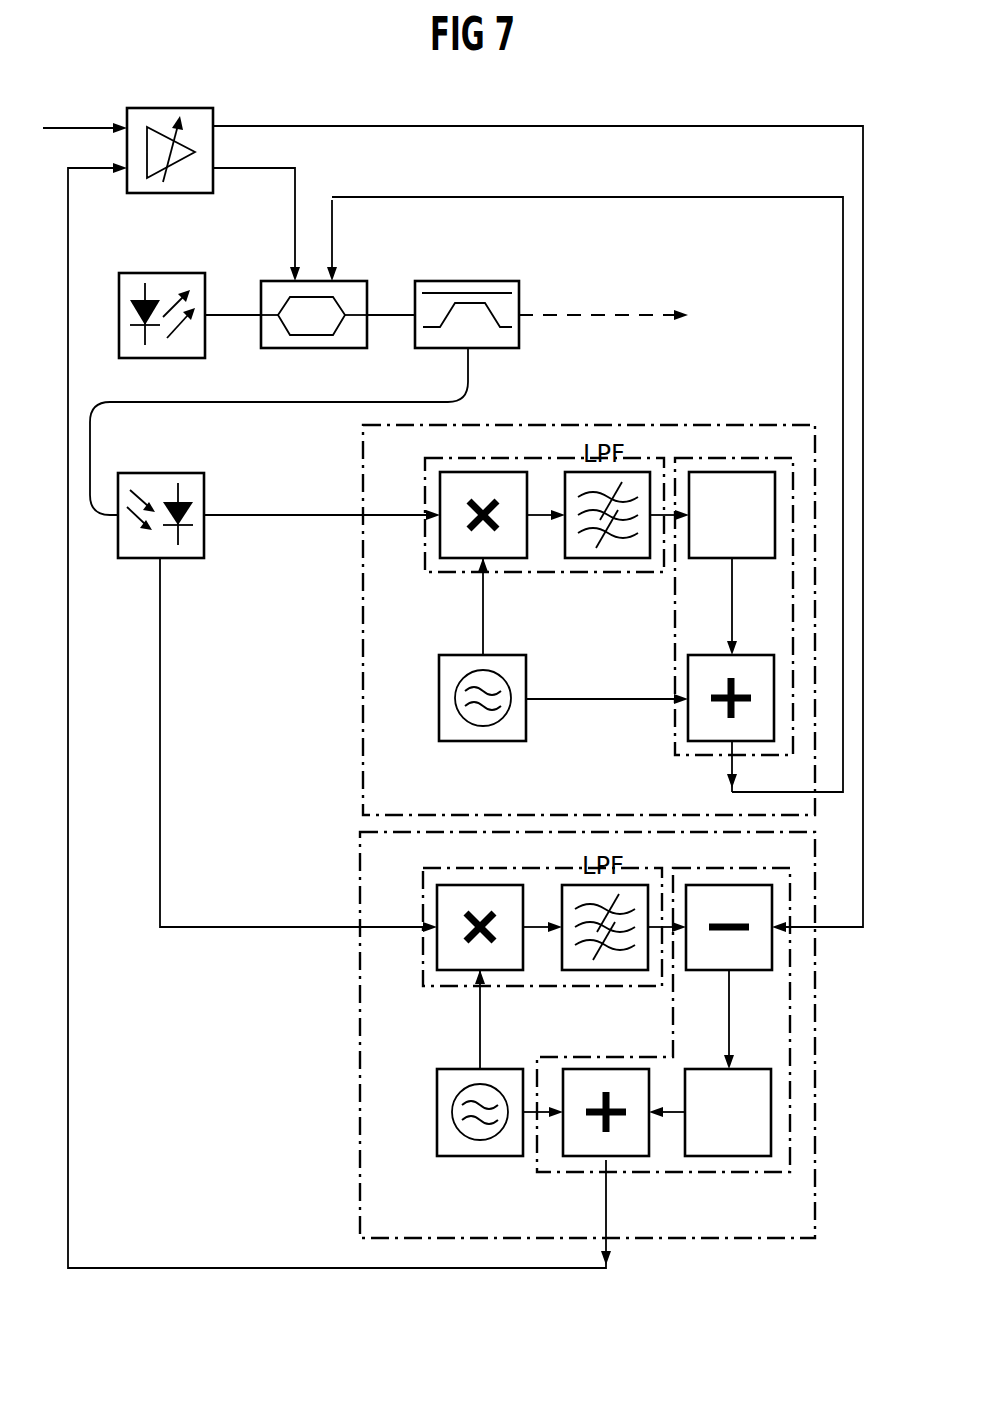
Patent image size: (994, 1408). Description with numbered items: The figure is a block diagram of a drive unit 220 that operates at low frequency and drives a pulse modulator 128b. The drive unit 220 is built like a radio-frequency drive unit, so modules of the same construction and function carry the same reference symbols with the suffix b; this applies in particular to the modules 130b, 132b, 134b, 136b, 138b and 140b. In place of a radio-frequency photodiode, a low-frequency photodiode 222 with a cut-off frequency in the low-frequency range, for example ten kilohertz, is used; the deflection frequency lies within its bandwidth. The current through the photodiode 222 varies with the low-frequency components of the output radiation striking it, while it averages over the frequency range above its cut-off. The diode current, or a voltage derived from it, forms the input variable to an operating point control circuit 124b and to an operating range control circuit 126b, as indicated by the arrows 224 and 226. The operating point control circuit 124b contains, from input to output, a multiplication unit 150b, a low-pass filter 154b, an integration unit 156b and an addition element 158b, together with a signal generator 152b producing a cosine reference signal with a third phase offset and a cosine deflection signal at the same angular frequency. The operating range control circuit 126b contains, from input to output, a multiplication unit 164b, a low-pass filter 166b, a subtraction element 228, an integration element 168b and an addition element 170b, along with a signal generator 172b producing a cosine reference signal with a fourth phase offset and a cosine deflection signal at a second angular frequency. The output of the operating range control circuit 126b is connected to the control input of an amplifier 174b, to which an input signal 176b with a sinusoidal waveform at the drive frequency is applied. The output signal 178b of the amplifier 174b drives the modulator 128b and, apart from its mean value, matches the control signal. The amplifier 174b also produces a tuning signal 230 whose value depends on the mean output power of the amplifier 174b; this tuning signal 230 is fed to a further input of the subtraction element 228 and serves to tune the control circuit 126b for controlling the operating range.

The amplifier 174b is at (196, 107).
The input signal 176b is at (86, 126).
The output signal 178b is at (280, 167).
The tuning signal 230 is at (770, 125).
The circuit module 130b is at (676, 196).
The circuit module 132b is at (68, 1057).
The circuit module 134b is at (205, 335).
The pulse modulator 128b is at (367, 335).
The circuit module 136b is at (500, 280).
The circuit module 138b is at (615, 314).
The circuit module 140b is at (470, 368).
The low-frequency photodiode 222 is at (120, 560).
The drive unit 220 is at (338, 560).
The arrow 224 is at (296, 514).
The arrow 226 is at (160, 855).
The operating point control circuit 124b is at (778, 424).
The operating range control circuit 126b is at (358, 1076).
The multiplication unit 150b is at (516, 558).
The low-pass filter 154b is at (615, 558).
The integration unit 156b is at (750, 560).
The signal generator 152b is at (526, 730).
The addition element 158b is at (700, 745).
The multiplication unit 164b is at (513, 970).
The low-pass filter 166b is at (605, 970).
The subtraction element 228 is at (757, 970).
The signal generator 172b is at (437, 1115).
The addition element 170b is at (630, 1156).
The integration element 168b is at (755, 1156).